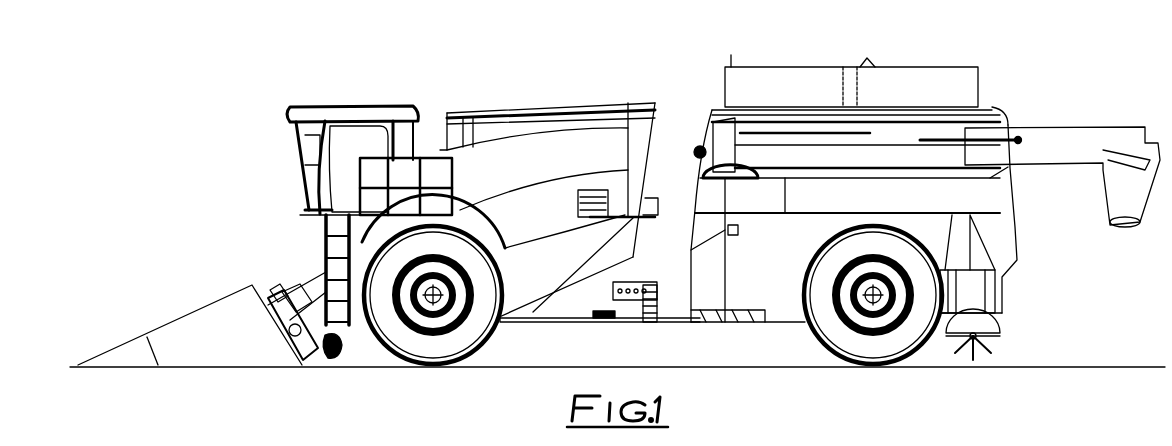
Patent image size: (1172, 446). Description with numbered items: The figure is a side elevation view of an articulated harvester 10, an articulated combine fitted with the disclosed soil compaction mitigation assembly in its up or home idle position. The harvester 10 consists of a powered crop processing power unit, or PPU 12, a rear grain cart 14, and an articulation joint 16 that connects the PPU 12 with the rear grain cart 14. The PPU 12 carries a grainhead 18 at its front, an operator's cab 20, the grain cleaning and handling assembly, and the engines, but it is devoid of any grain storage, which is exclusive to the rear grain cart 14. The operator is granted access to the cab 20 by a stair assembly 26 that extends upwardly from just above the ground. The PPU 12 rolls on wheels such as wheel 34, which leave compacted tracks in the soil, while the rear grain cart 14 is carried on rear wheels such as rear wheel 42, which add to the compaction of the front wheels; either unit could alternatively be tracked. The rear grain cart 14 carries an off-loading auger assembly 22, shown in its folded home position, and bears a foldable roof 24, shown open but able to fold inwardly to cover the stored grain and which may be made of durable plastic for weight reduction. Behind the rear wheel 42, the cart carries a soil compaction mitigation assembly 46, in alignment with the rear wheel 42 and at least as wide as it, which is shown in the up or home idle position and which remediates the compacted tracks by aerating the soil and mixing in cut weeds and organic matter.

The articulated harvester 10 is at (542, 82).
The powered PPU (crop processing power unit) 12 is at (290, 65).
The rear grain cart 14 is at (1017, 73).
The articulation joint 16 is at (588, 332).
The grainhead 18 is at (217, 310).
The operator's cab 20 is at (362, 103).
The off-loading auger assembly 22 is at (1050, 138).
The foldable roof 24 is at (783, 78).
The stair assembly 26 is at (323, 255).
The wheel 34 is at (432, 352).
The rear wheel 42 is at (872, 352).
The soil compaction mitigation assembly 46 is at (1005, 327).